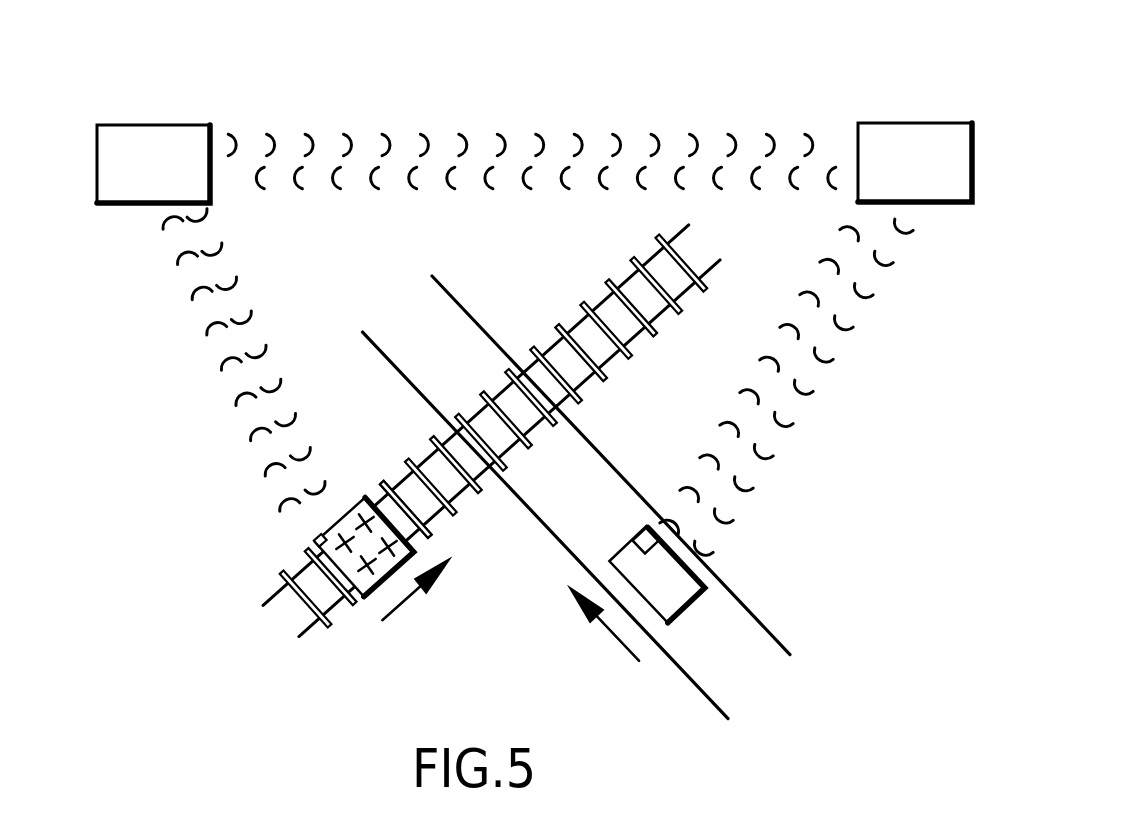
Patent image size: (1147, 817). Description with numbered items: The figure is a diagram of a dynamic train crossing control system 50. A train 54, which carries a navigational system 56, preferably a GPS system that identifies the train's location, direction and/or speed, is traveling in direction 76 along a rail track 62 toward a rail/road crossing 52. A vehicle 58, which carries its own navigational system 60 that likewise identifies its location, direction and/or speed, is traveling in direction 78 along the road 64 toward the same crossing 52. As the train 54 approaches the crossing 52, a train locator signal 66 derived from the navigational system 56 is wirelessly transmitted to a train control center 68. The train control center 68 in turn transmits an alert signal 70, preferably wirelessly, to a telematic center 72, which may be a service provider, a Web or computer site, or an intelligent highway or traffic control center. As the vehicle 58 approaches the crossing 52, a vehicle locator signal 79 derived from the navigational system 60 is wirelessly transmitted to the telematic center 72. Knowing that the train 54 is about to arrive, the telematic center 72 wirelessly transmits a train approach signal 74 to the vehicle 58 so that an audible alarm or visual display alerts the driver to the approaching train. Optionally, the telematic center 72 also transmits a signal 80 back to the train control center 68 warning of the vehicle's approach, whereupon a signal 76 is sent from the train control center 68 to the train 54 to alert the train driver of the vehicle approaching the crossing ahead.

The dynamic train crossing control system 50 is at (717, 81).
The rail/road crossing 52 is at (502, 438).
The train 54 is at (367, 598).
The navigational system 56 is at (310, 533).
The vehicle 58 is at (682, 588).
The navigational system 60 is at (637, 528).
The rail track 62 is at (425, 505).
The road 64 is at (715, 657).
The train locator signal 66 is at (203, 306).
The train control center 68 is at (153, 146).
The alert signal 70 is at (328, 138).
The telematic center 72 is at (918, 146).
The train approach signal 74 is at (827, 338).
The direction of travel / signal to train 76 is at (257, 327).
The direction of travel 78 is at (622, 645).
The vehicle locator signal 79 is at (766, 356).
The signal 80 is at (402, 184).